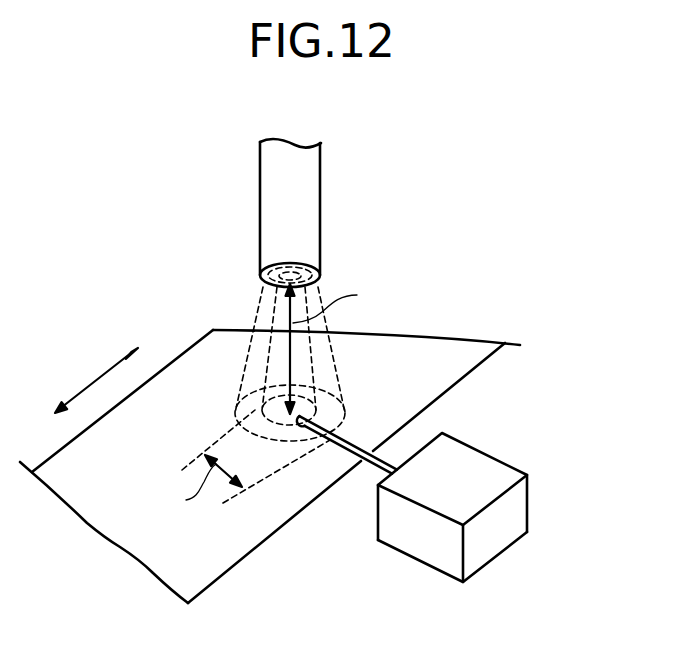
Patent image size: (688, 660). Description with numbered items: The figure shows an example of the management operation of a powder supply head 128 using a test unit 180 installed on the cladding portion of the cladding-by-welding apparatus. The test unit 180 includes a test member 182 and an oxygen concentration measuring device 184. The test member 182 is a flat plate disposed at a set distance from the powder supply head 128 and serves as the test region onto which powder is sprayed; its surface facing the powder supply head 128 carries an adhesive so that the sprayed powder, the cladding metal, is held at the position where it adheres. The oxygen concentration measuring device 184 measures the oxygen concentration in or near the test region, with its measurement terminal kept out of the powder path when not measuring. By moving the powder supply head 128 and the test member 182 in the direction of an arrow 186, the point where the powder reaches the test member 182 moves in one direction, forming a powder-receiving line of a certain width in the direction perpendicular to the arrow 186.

The powder supply head 128 is at (321, 200).
The test unit 180 is at (115, 197).
The test member 182 is at (430, 384).
The oxygen concentration measuring device 184 is at (528, 505).
The arrow 186 is at (100, 376).